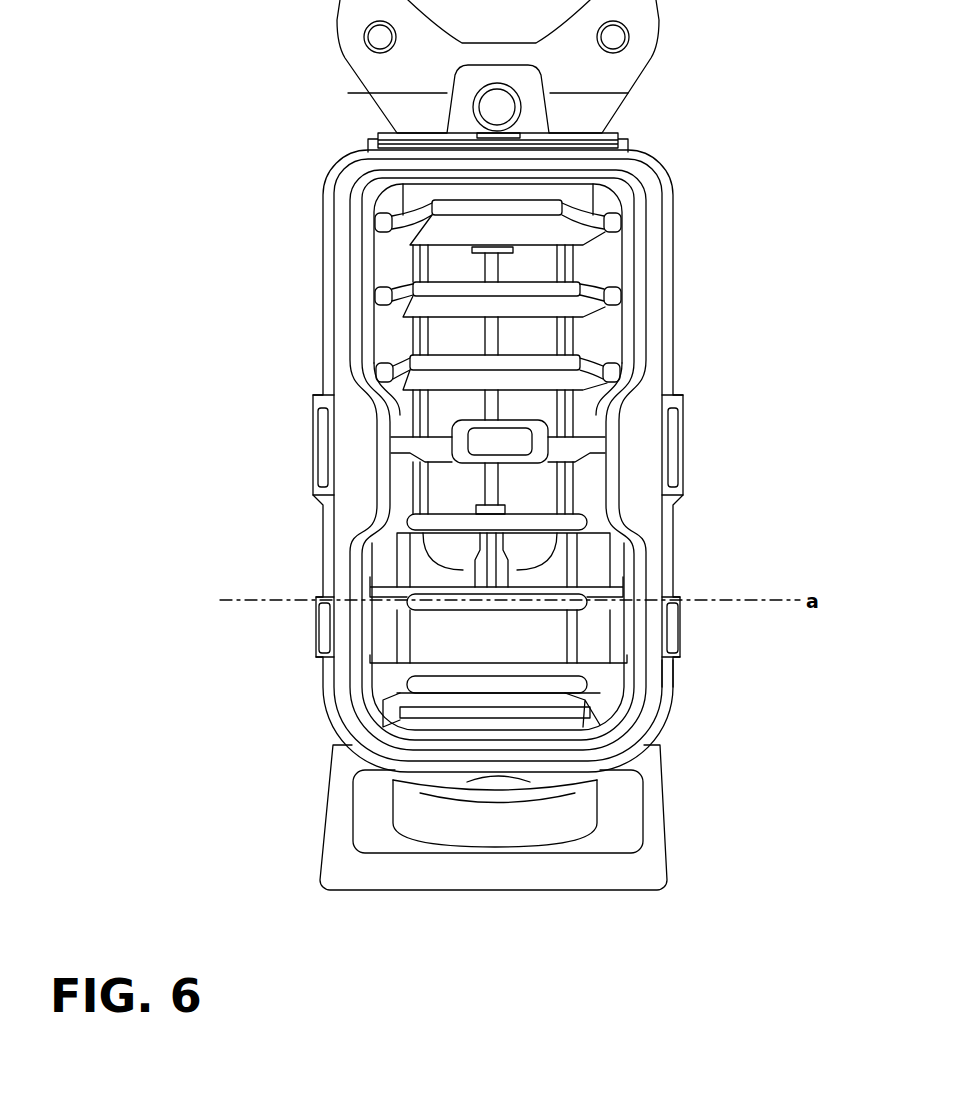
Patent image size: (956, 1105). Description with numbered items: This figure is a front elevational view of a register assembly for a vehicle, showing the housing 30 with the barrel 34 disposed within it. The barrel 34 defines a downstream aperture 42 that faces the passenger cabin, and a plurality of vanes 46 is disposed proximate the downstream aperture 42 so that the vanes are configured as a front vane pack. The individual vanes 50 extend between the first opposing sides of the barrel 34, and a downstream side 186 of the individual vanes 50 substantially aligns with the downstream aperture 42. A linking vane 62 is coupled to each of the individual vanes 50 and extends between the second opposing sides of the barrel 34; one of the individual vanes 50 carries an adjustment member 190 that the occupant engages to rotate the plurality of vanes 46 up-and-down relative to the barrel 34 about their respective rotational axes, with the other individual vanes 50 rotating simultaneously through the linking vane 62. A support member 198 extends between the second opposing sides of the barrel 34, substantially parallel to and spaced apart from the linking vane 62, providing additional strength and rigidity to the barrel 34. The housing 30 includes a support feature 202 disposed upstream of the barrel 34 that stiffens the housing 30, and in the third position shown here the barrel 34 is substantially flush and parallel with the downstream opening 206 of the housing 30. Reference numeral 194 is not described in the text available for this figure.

The housing 30 is at (675, 552).
The barrel 34 is at (640, 330).
The downstream aperture 42 is at (620, 347).
The plurality of vanes 46 is at (604, 207).
The individual vane 50 is at (590, 287).
The linking vane 62 is at (417, 632).
The downstream side 186 is at (453, 363).
The adjustment member 190 is at (478, 443).
The plate body 194 is at (447, 397).
The support member 198 is at (573, 497).
The support feature 202 is at (488, 265).
The downstream opening 206 is at (663, 678).